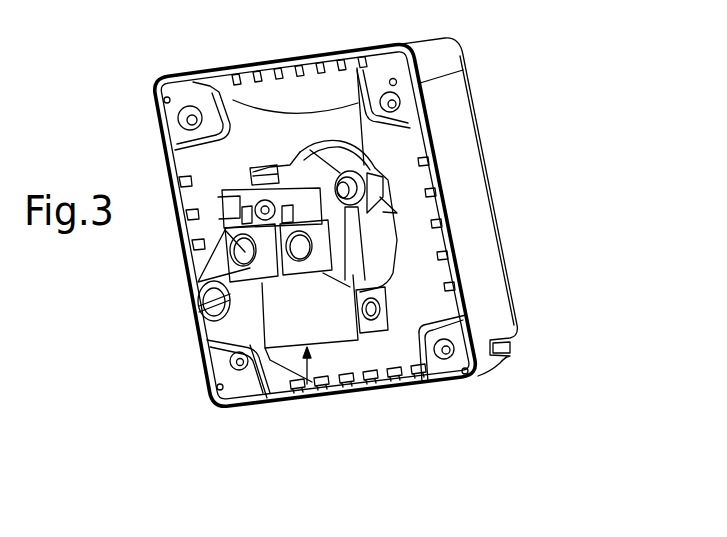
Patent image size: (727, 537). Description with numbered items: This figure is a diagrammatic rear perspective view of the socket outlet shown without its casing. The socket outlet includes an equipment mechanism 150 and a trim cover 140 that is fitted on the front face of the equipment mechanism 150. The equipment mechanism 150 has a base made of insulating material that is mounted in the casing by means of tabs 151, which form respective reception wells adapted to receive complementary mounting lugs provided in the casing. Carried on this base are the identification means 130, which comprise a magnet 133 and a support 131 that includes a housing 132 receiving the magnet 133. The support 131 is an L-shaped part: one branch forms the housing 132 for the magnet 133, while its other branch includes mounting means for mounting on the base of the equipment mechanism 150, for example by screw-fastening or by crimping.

The identification means 130 is at (305, 407).
The support 131 is at (327, 340).
The housing 132 is at (375, 335).
The magnet 133 is at (377, 300).
The trim cover 140 is at (490, 277).
The equipment mechanism 150 is at (330, 247).
The tabs 151 is at (313, 68).